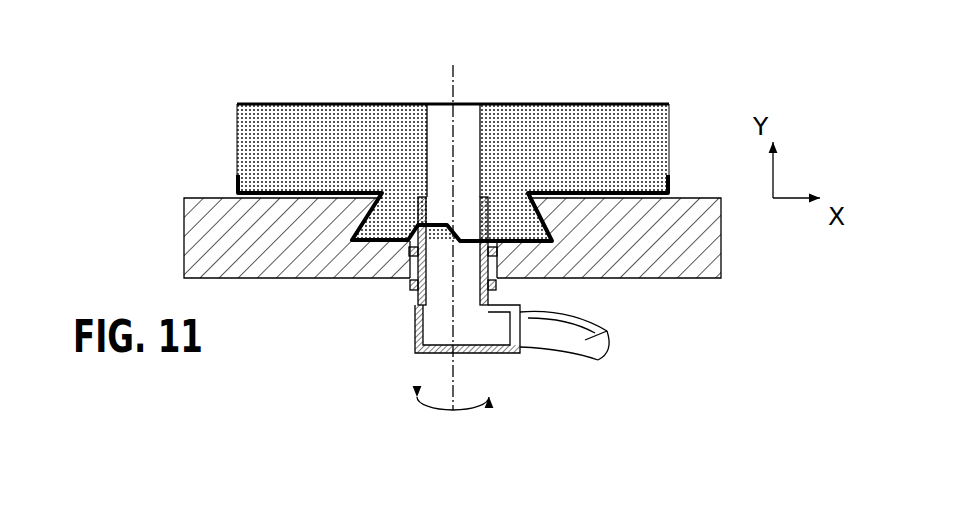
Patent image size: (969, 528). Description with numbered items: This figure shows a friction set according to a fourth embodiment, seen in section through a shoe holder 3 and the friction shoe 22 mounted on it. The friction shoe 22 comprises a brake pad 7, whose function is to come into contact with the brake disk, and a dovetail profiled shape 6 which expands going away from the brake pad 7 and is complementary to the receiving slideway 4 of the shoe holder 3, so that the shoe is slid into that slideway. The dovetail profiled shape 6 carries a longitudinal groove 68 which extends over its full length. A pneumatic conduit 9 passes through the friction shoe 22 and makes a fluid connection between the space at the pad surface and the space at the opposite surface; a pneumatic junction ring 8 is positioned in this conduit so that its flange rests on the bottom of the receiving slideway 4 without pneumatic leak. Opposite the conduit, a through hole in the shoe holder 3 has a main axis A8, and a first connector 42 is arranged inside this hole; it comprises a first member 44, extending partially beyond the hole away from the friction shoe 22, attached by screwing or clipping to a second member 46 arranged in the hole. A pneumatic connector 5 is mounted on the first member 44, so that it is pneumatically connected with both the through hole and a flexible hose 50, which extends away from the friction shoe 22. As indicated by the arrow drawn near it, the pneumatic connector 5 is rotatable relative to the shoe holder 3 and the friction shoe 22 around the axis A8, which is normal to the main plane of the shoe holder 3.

The shoe holder 3 is at (203, 197).
The receiving slideway 4 is at (375, 247).
The pneumatic connector 5 is at (412, 355).
The dovetail profiled shape 6 is at (355, 216).
The brake pad 7 is at (293, 99).
The pneumatic junction ring 8 is at (484, 195).
The pneumatic conduit 9 is at (481, 125).
The friction shoe 22 is at (633, 141).
The first connector 42 is at (413, 308).
The first member 44 is at (486, 312).
The second member 46 is at (492, 238).
The flexible hose 50 is at (585, 340).
The longitudinal groove 68 is at (415, 223).
The main axis of the through hole A8 is at (434, 231).